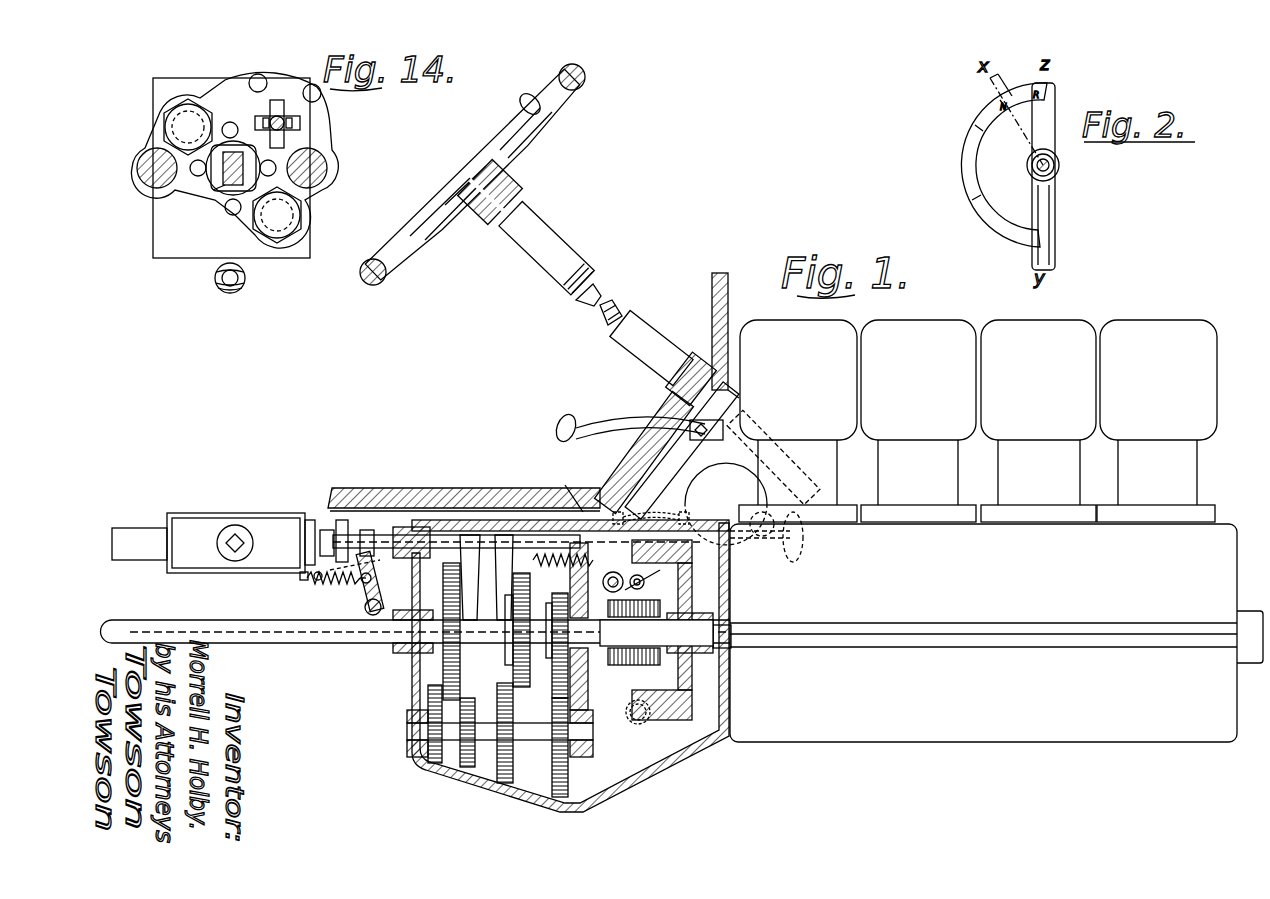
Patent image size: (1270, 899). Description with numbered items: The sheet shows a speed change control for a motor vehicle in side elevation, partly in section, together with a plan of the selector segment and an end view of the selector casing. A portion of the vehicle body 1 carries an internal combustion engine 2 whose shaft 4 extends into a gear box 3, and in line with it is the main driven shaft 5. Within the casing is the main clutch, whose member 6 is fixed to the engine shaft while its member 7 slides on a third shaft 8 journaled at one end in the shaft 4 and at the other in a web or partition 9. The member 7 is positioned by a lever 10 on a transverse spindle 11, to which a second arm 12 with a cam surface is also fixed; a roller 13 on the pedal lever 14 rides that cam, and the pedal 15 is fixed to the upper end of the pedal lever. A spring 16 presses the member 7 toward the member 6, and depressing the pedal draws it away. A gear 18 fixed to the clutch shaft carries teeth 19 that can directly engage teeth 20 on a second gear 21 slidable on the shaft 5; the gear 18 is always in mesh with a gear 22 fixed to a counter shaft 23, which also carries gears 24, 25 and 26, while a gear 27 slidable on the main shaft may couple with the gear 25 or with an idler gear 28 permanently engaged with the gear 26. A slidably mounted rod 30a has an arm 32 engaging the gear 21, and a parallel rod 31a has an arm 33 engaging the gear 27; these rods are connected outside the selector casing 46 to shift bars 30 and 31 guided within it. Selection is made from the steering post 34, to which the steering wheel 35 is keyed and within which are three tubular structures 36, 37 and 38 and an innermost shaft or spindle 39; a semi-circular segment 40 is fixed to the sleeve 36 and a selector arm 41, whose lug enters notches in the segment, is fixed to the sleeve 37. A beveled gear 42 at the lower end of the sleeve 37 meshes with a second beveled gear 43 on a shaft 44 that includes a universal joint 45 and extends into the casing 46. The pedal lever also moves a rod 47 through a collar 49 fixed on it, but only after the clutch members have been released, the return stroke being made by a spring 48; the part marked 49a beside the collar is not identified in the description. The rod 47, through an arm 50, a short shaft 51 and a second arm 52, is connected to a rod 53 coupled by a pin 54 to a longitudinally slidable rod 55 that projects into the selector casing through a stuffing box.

In FIG. 1, the body of a motor vehicle 1 is at (470, 492).
In FIG. 1, the internal combustion engine 2 is at (996, 531).
In FIG. 1, the gear box 3 is at (666, 757).
In FIG. 1, the engine shaft 4 is at (716, 654).
In FIG. 1, the main driven shaft 5 is at (341, 640).
In FIG. 1, the clutch member 6 is at (692, 714).
In FIG. 1, the clutch member 7 is at (640, 700).
In FIG. 1, the third shaft 8 is at (692, 660).
In FIG. 1, the web or partition 9 is at (597, 716).
In FIG. 1, the lever 10 is at (607, 586).
In FIG. 1, the transverse spindle 11 is at (612, 576).
In FIG. 1, the second arm 12 is at (672, 604).
In FIG. 1, the roller 13 is at (660, 583).
In FIG. 1, the pedal lever 14 is at (665, 470).
In FIG. 1, the pedal 15 is at (616, 422).
In FIG. 1, the spring 16 is at (622, 655).
In FIG. 1, the gear 18 is at (560, 600).
In FIG. 1, the teeth 19 is at (551, 666).
In FIG. 1, the teeth 20 is at (532, 615).
In FIG. 1, the second gear 21 is at (516, 682).
In FIG. 1, the gear 22 is at (570, 770).
In FIG. 1, the counter shaft 23 is at (534, 720).
In FIG. 1, the gear 24 is at (505, 786).
In FIG. 1, the gear 25 is at (469, 770).
In FIG. 1, the gear 26 is at (436, 765).
In FIG. 1, the gear 27 is at (456, 662).
In FIG. 1, the idler gear 28 is at (412, 681).
In FIG. 14, the shift bar 30 is at (168, 124).
In FIG. 1, the shift bar 30 is at (333, 507).
In FIG. 14, the slidably mounted rod 30a is at (138, 167).
In FIG. 1, the slidably mounted rod 30a is at (390, 540).
In FIG. 14, the shift bar 31 is at (298, 217).
In FIG. 1, the shift bar 31 is at (322, 582).
In FIG. 14, the second slidably mounted rod 31a is at (327, 168).
In FIG. 1, the arm 32 is at (505, 578).
In FIG. 1, the arm 33 is at (478, 560).
In FIG. 1, the steering post 34 is at (660, 350).
In FIG. 1, the steering wheel 35 is at (530, 170).
In FIG. 1, the tubular structure 36 is at (590, 284).
In FIG. 1, the tubular structure 37 is at (596, 296).
In FIG. 1, the tubular structure 38 is at (588, 302).
In FIG. 1, the shaft or spindle 39 is at (603, 314).
In FIG. 2, the semi-circular segment 40 is at (966, 172).
In FIG. 1, the semi-circular segment 40 is at (447, 205).
In FIG. 2, the selector arm 41 is at (1056, 212).
In FIG. 1, the selector arm 41 is at (523, 104).
In FIG. 1, the beveled gear 42 is at (812, 498).
In FIG. 1, the second beveled gear 43 is at (806, 545).
In FIG. 14, the shaft 44 is at (290, 125).
In FIG. 1, the shaft 44 is at (385, 538).
In FIG. 14, the universal joint 45 is at (285, 116).
In FIG. 14, the selector casing 46 is at (298, 84).
In FIG. 1, the selector casing 46 is at (232, 570).
In FIG. 1, the rod 47 is at (565, 491).
In FIG. 14, the spring 48 is at (245, 280).
In FIG. 1, the spring 48 is at (322, 598).
In FIG. 1, the collar 49 is at (690, 521).
In FIG. 1, the quadrant 49a is at (612, 510).
In FIG. 1, the arm 50 is at (362, 586).
In FIG. 1, the short shaft 51 is at (372, 617).
In FIG. 1, the second arm 52 is at (386, 566).
In FIG. 14, the rod 53 is at (222, 196).
In FIG. 1, the rod 53 is at (347, 541).
In FIG. 1, the pin 54 is at (343, 490).
In FIG. 14, the longitudinally slidable rod 55 is at (213, 190).
In FIG. 1, the longitudinally slidable rod 55 is at (310, 580).